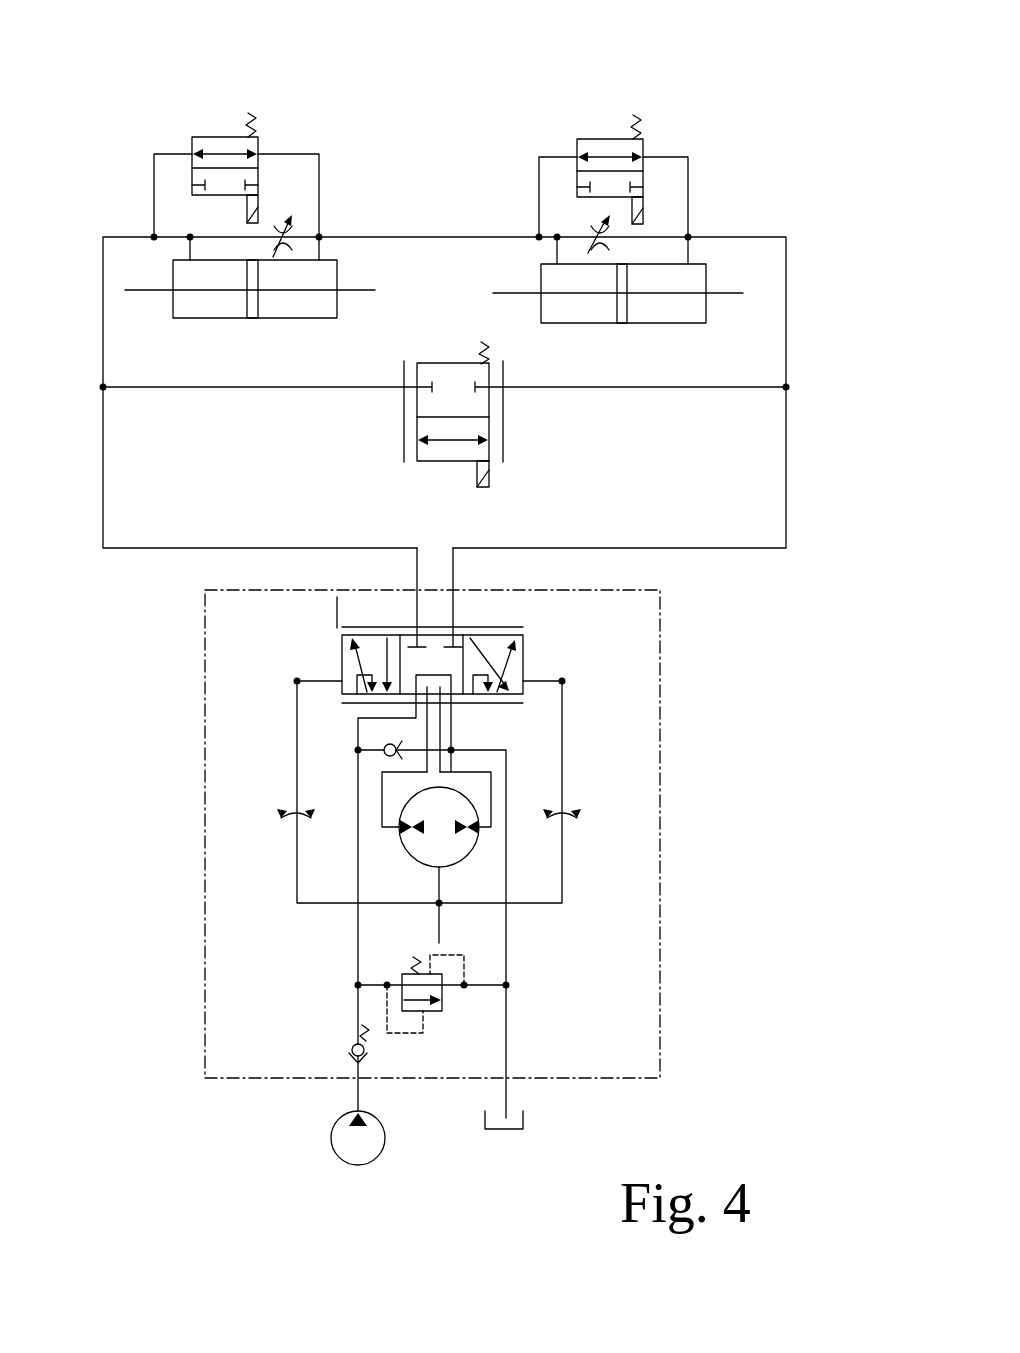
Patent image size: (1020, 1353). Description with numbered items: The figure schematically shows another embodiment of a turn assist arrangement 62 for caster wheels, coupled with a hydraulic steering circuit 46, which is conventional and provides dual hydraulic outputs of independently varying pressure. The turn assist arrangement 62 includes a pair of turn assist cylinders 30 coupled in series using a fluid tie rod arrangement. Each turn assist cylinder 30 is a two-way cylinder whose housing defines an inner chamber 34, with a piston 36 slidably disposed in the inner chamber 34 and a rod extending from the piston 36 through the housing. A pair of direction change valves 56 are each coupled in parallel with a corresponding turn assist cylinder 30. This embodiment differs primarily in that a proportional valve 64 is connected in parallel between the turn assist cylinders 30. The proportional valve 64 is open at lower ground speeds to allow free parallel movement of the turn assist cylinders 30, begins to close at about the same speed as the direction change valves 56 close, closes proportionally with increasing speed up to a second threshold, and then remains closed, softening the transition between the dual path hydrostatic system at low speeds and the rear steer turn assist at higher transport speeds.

The turn assist cylinder 30 is at (215, 318).
The inner chamber 34 is at (190, 308).
The piston 36 is at (253, 320).
The hydraulic steering circuit 46 is at (203, 665).
The direction change valve 56 is at (210, 137).
The turn assist arrangement 62 is at (488, 149).
The proportional valve 64 is at (430, 462).